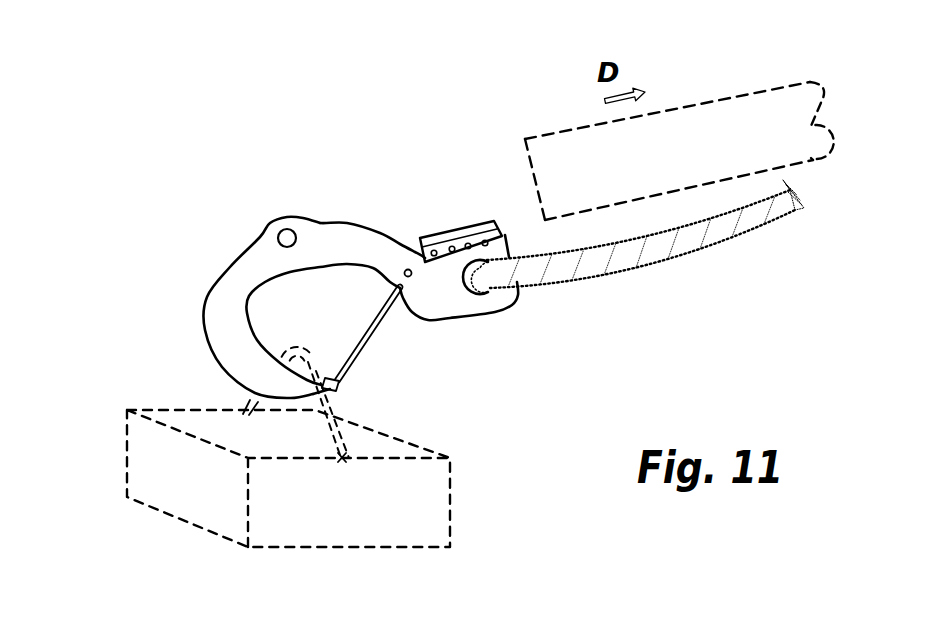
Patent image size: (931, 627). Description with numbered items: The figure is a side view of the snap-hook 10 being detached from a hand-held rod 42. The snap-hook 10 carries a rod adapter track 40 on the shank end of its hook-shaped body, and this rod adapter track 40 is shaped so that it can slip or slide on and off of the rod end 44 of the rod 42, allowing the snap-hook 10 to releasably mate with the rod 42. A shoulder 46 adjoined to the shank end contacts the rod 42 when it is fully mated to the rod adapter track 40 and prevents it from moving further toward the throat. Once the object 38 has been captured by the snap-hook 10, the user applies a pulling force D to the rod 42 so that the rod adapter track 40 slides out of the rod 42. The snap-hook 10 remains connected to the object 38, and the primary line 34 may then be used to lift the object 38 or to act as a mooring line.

The snap-hook 10 is at (186, 298).
The primary line 34 is at (572, 280).
The object 38 is at (123, 479).
The rod adapter track 40 is at (473, 227).
The rod 42 is at (760, 89).
The rod end 44 is at (528, 179).
The shoulder 46 is at (395, 237).